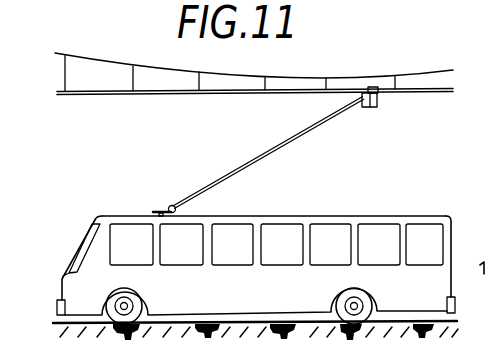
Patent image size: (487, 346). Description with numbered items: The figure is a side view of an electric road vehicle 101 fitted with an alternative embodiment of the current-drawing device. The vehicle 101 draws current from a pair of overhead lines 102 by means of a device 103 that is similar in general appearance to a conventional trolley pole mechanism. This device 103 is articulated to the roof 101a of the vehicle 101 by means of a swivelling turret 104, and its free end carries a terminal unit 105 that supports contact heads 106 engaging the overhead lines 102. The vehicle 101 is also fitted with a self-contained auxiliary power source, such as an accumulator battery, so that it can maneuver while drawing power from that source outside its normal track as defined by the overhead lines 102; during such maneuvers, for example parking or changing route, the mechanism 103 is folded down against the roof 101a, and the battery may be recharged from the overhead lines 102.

The electric road vehicle 101 is at (340, 215).
The roof 101a is at (234, 216).
The overhead lines 102 is at (159, 93).
The device 103 is at (268, 153).
The swivelling turret 104 is at (153, 212).
The terminal unit 105 is at (366, 107).
The contact heads 106 is at (378, 92).